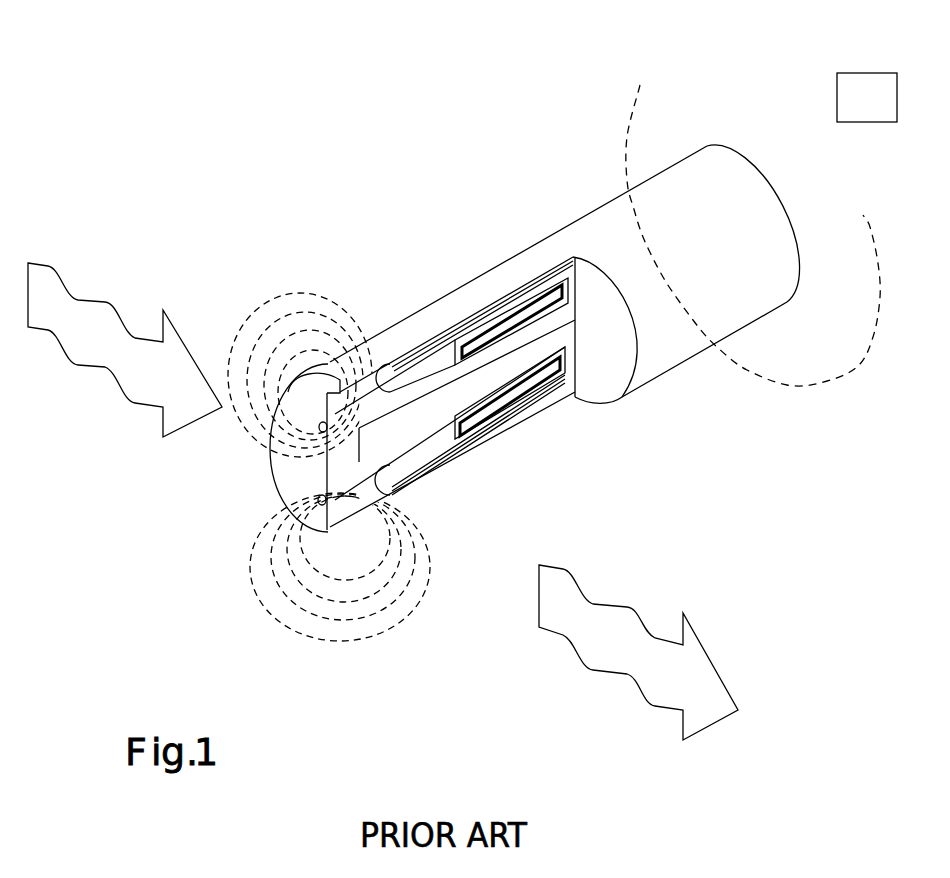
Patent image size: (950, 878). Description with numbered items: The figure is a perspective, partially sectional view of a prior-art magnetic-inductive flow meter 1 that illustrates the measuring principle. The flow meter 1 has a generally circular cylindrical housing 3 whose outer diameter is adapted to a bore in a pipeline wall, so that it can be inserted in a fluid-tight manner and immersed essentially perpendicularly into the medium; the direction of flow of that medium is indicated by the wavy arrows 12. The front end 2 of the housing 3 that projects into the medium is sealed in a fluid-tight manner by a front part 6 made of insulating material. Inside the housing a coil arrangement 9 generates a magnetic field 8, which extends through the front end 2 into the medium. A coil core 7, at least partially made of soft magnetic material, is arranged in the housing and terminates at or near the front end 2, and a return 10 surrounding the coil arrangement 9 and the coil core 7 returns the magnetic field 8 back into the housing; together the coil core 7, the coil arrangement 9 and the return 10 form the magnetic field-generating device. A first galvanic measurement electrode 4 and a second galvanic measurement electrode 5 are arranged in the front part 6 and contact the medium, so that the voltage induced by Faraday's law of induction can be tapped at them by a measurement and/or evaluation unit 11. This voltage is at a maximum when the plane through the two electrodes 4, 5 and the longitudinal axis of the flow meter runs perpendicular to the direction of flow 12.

The flow meter 1 is at (211, 74).
The front end 2 is at (288, 480).
The housing 3 is at (582, 215).
The first galvanic measurement electrode 4 is at (323, 425).
The second galvanic measurement electrode 5 is at (353, 485).
The front part 6 is at (327, 424).
The coil core 7 is at (420, 415).
The magnetic field 8 is at (243, 330).
The coil arrangement 9 is at (467, 348).
The return 10 is at (562, 398).
The measurement and/or evaluation unit 11 is at (785, 203).
The wavy arrows 12 is at (708, 658).